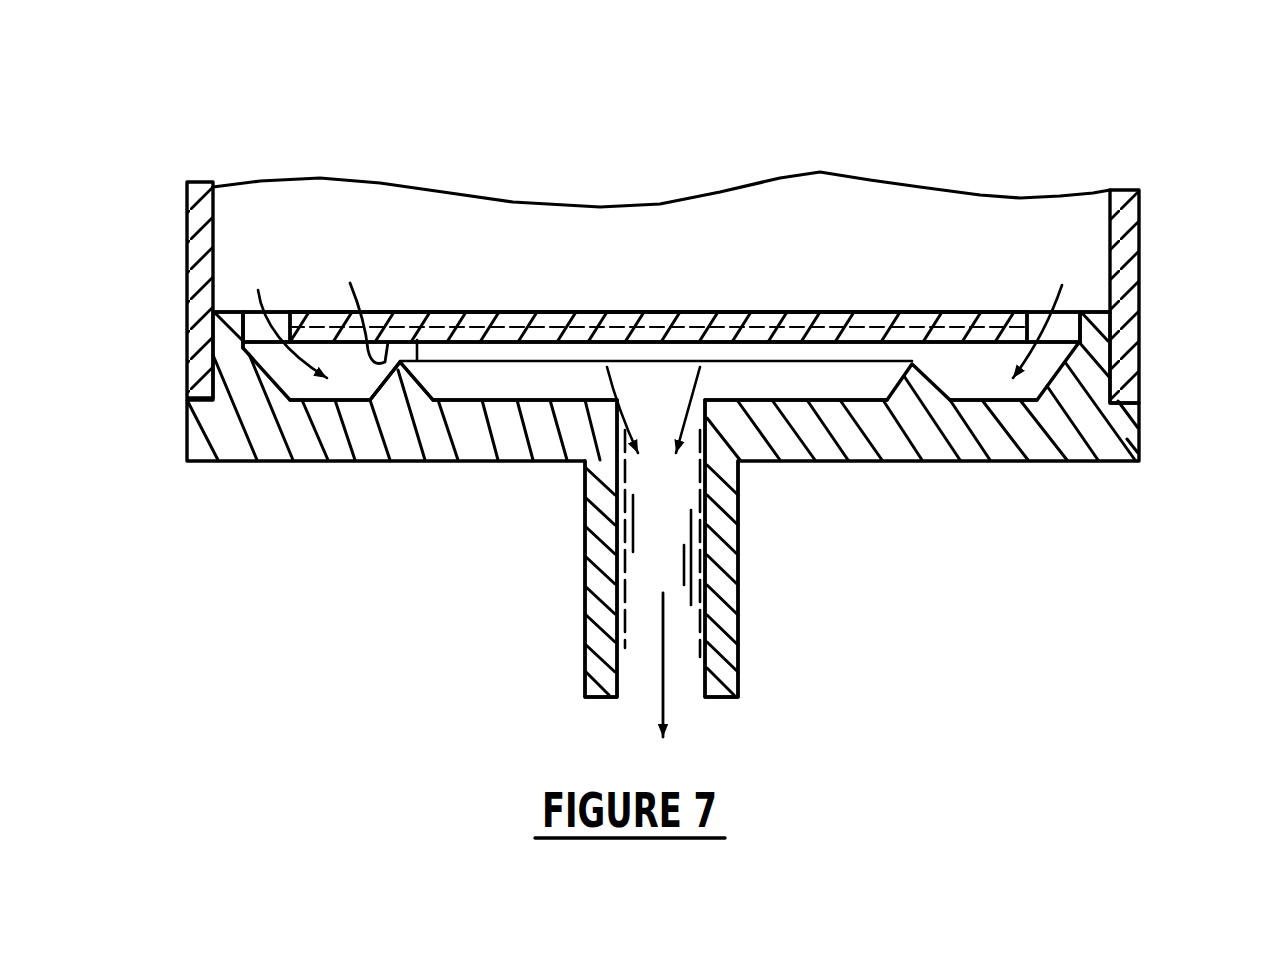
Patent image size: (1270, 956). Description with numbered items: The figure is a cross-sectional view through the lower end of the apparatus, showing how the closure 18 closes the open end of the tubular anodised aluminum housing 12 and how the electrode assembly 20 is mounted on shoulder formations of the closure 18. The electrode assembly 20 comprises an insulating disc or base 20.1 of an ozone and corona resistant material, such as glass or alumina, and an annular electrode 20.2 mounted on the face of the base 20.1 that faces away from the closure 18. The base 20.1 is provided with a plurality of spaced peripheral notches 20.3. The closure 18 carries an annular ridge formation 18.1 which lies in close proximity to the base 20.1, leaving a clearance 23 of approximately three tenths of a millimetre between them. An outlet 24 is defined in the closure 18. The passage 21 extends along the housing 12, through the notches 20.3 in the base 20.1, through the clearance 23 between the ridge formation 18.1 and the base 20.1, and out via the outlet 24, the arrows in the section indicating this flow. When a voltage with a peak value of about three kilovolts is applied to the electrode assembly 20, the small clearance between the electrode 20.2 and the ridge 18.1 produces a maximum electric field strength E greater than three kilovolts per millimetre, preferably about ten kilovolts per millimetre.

The housing 12 is at (840, 223).
The closure 18 is at (1140, 443).
The ridge formation 18.1 is at (403, 393).
The electrode assembly 20 is at (916, 255).
The base 20.1 is at (963, 312).
The annular electrode 20.2 is at (397, 312).
The peripheral notches 20.3 is at (258, 290).
The passage 21 is at (1093, 220).
The clearance 23 is at (868, 352).
The outlet 24 is at (683, 640).
The electric field strength E is at (337, 262).